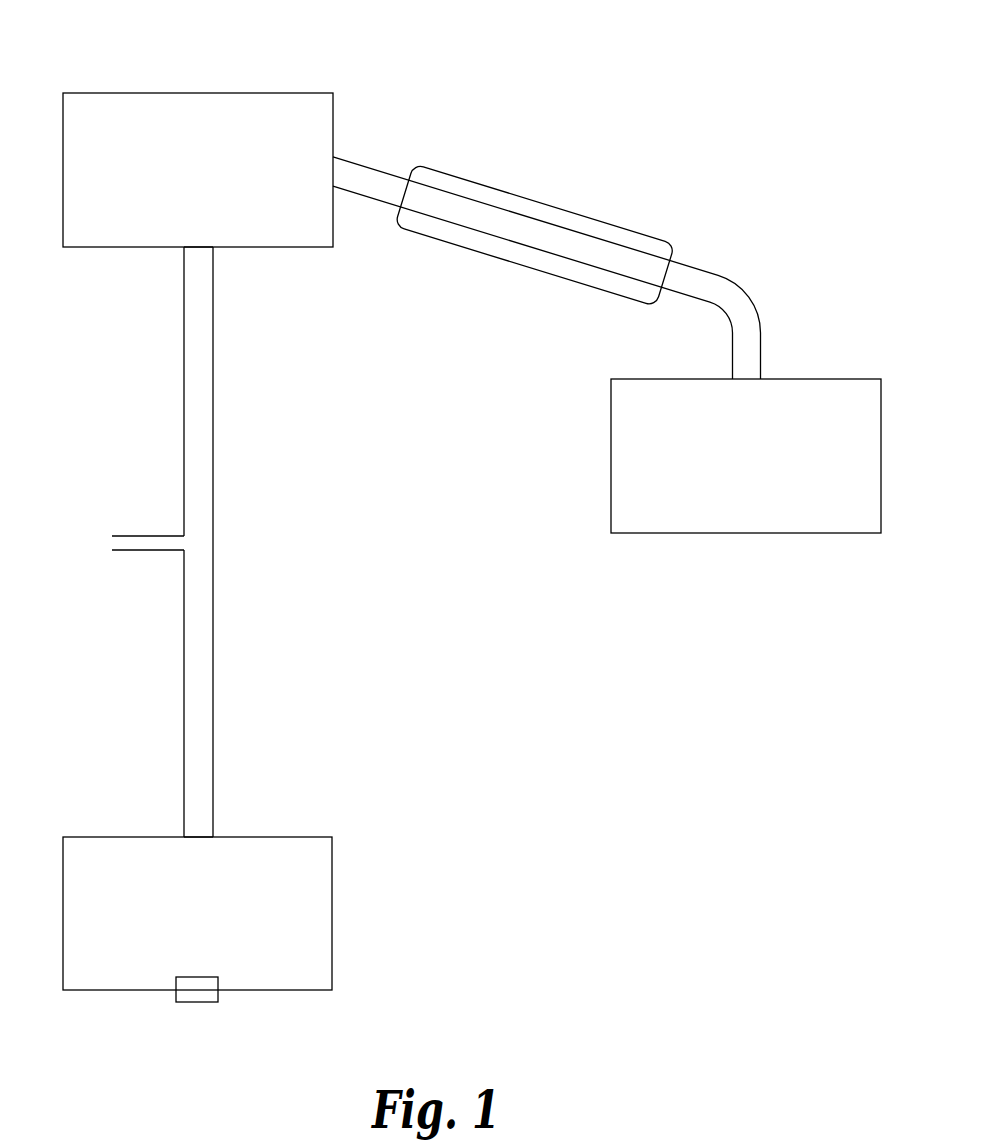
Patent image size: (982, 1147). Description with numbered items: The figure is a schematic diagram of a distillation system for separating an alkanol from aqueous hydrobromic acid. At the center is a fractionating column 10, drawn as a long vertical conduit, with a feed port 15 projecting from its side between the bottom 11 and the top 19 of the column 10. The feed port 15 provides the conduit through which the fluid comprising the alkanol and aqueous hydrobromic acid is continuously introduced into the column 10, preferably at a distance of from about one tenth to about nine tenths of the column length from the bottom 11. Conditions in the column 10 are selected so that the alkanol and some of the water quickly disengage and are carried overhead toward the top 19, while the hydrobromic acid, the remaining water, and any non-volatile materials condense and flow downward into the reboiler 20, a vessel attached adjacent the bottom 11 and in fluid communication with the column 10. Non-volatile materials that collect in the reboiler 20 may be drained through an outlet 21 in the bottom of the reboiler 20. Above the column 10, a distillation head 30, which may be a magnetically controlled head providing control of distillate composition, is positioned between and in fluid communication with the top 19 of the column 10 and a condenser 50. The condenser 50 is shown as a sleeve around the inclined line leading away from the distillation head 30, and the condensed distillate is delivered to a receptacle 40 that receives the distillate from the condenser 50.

The fractionating column 10 is at (213, 453).
The bottom of the column 11 is at (184, 837).
The feed port 15 is at (145, 535).
The top of the column 19 is at (197, 247).
The reboiler 20 is at (333, 908).
The outlet 21 is at (195, 1003).
The distillation head 30 is at (204, 93).
The receptacle 40 is at (611, 437).
The condenser 50 is at (513, 192).